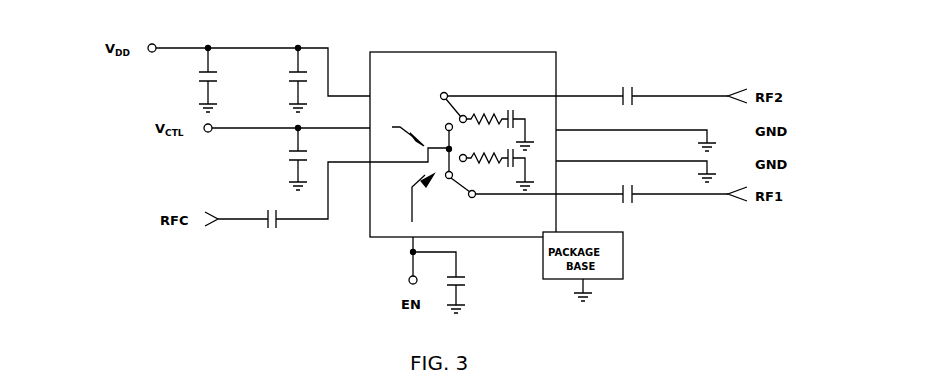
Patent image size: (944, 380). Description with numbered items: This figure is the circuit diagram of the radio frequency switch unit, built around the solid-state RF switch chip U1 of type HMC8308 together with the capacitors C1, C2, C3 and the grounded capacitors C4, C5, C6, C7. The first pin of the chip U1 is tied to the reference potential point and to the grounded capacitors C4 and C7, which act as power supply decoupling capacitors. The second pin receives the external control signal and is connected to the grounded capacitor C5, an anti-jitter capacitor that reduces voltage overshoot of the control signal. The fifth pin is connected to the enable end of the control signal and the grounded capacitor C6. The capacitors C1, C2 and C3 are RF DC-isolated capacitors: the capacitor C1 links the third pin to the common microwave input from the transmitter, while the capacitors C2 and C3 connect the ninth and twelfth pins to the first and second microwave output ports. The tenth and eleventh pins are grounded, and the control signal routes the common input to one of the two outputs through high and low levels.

The solid-state RF switch chip U1 is at (463, 135).
The capacitor C1 is at (269, 219).
The capacitor C2 is at (642, 194).
The capacitor C3 is at (642, 96).
The grounded capacitor C4 is at (275, 80).
The grounded capacitor C5 is at (275, 159).
The grounded capacitor C6 is at (462, 282).
The grounded capacitor C7 is at (190, 80).